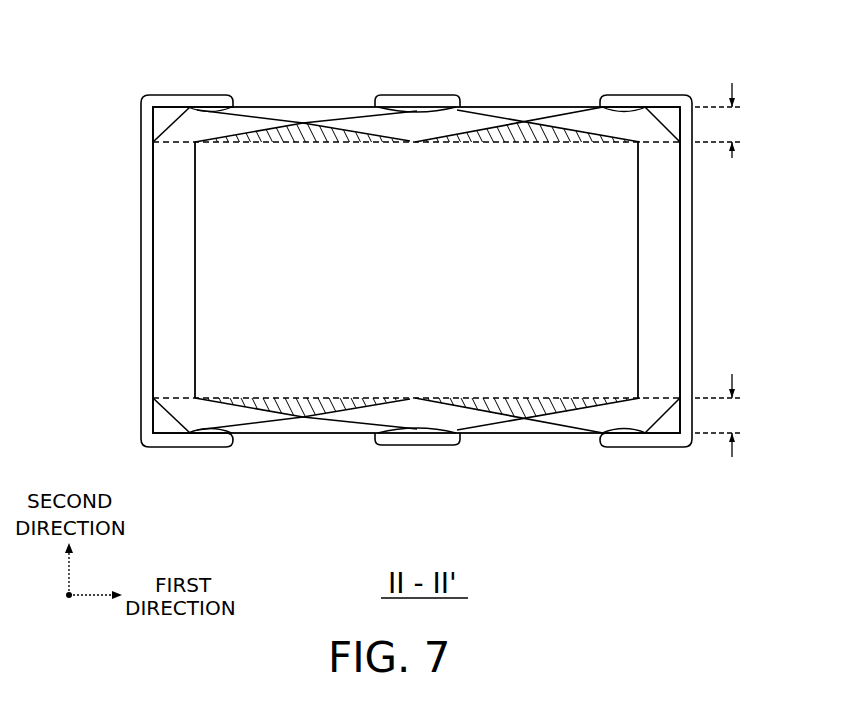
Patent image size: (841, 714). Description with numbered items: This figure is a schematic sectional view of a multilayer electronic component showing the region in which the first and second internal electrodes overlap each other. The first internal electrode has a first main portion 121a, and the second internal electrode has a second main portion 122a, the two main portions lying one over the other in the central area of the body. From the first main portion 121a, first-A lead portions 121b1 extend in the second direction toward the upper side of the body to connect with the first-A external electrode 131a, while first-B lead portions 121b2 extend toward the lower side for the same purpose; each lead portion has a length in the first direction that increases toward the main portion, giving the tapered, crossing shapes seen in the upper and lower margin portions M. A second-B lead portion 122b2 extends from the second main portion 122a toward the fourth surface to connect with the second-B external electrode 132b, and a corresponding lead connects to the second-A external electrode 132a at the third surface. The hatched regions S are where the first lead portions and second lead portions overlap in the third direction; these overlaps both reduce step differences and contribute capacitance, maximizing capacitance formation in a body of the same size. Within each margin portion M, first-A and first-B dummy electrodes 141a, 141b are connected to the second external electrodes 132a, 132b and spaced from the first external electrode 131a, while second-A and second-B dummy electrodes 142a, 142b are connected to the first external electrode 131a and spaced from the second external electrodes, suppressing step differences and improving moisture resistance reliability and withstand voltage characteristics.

The first-A external electrode 131a is at (160, 96).
The second-A dummy electrode 142a is at (204, 104).
The first-A lead portion 121b1 is at (247, 120).
The first-A dummy electrode 141a is at (406, 101).
The second-A external electrode 132a is at (418, 112).
The overlap region S is at (283, 142).
The first main portion 121a is at (172, 240).
The second main portion 122a is at (212, 292).
The margin portion M is at (725, 270).
The second-B dummy electrode 142b is at (197, 440).
The first-B lead portion 121b2 is at (243, 434).
The second-B lead portion 122b2 is at (360, 435).
The first-B dummy electrode 141b is at (418, 436).
The second-B external electrode 132b is at (447, 444).